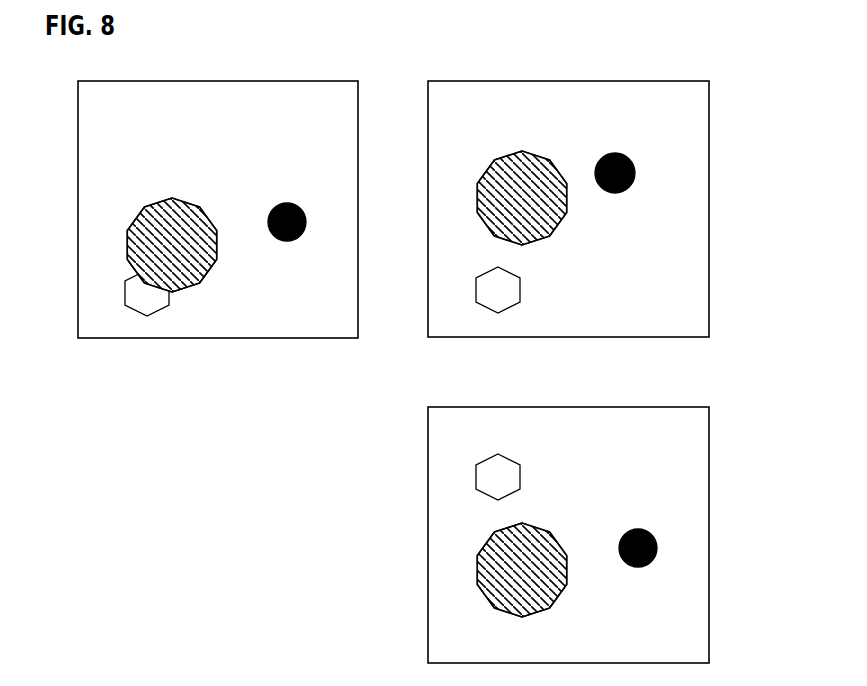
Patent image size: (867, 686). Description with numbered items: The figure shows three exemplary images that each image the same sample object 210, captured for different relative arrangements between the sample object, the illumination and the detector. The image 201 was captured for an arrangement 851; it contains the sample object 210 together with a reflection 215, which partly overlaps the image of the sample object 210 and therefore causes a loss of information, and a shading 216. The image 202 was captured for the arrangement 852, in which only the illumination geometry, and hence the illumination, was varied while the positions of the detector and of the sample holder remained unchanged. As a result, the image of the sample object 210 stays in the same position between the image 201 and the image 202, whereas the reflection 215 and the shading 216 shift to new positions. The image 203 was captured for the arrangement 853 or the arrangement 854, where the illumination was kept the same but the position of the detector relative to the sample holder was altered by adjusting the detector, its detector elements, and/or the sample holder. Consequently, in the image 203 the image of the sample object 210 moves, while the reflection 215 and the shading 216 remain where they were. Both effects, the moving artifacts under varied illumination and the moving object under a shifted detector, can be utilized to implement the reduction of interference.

The image 201 is at (339, 85).
The image 202 is at (442, 85).
The image 203 is at (442, 412).
The sample object 210 is at (169, 303).
The reflection 215 is at (183, 200).
The shading 216 is at (287, 203).
The arrangement 851 is at (215, 60).
The arrangement 852 is at (655, 60).
The arrangement 853 is at (614, 511).
The arrangement 854 is at (707, 385).